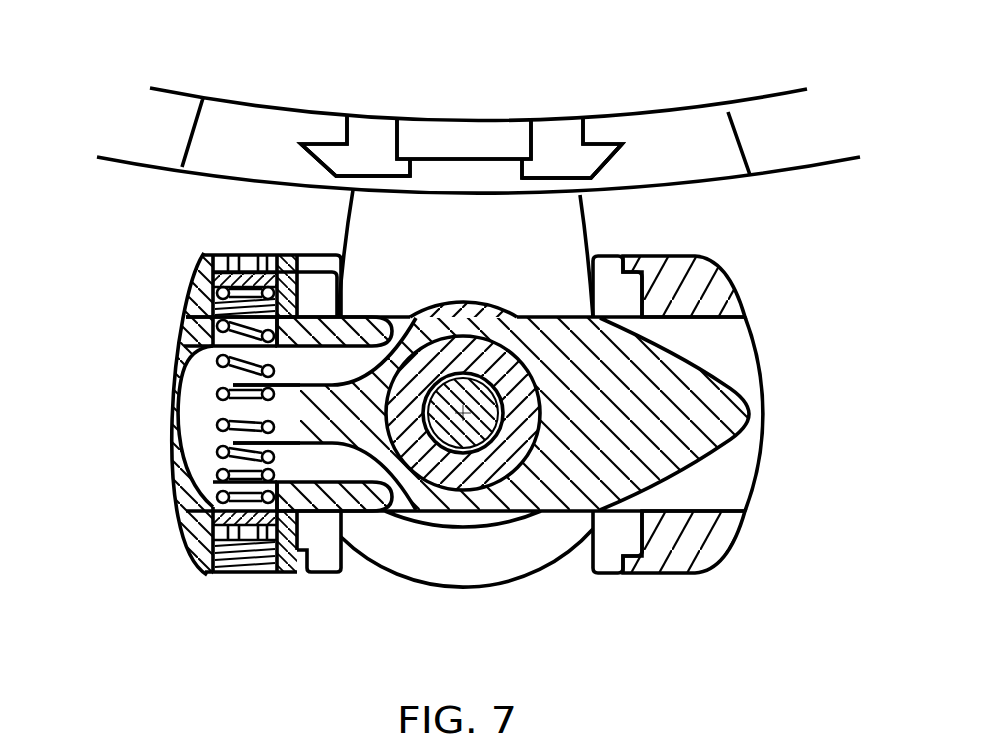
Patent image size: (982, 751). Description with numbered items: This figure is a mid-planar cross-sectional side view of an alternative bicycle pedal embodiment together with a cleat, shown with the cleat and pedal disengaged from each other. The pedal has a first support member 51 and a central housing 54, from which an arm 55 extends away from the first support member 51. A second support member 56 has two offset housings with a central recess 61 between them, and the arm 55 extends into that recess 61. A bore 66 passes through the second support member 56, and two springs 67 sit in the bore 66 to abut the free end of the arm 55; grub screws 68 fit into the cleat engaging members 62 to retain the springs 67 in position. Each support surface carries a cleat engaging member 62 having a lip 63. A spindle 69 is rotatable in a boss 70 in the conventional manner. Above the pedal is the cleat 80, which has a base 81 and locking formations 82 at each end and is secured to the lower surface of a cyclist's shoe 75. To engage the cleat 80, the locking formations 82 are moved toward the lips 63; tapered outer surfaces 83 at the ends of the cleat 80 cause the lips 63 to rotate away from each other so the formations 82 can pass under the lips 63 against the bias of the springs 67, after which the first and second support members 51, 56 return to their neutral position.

The first support member 51 is at (737, 490).
The central housing 54 is at (462, 317).
The arm 55 is at (328, 395).
The second support member 56 is at (222, 411).
The central recess 61 is at (200, 432).
The cleat engaging member 62 is at (720, 547).
The lip 63 is at (613, 573).
The bore 66 is at (186, 347).
The springs 67 is at (185, 478).
The grub screws 68 is at (207, 570).
The spindle 69 is at (475, 440).
The boss 70 is at (448, 483).
The cyclist's shoe 75 is at (170, 111).
The cleat 80 is at (613, 88).
The base 81 is at (445, 132).
The locking formations 82 is at (618, 152).
The tapered outer surfaces 83 is at (620, 157).